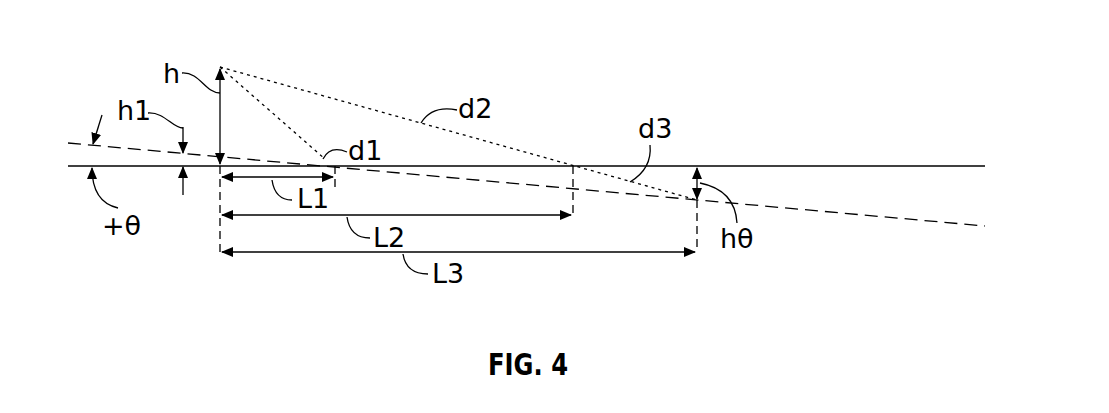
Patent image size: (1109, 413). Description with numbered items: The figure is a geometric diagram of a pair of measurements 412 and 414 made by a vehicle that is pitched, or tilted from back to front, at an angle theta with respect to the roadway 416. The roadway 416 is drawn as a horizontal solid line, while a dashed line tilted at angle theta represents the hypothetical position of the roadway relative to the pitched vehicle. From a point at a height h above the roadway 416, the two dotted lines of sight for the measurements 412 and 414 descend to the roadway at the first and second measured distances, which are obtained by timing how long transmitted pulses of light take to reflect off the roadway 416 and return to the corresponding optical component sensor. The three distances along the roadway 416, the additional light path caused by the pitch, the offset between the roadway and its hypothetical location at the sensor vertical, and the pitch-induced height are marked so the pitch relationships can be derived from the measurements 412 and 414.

The measurement 412 is at (291, 128).
The measurement 414 is at (331, 100).
The roadway 416 is at (780, 166).